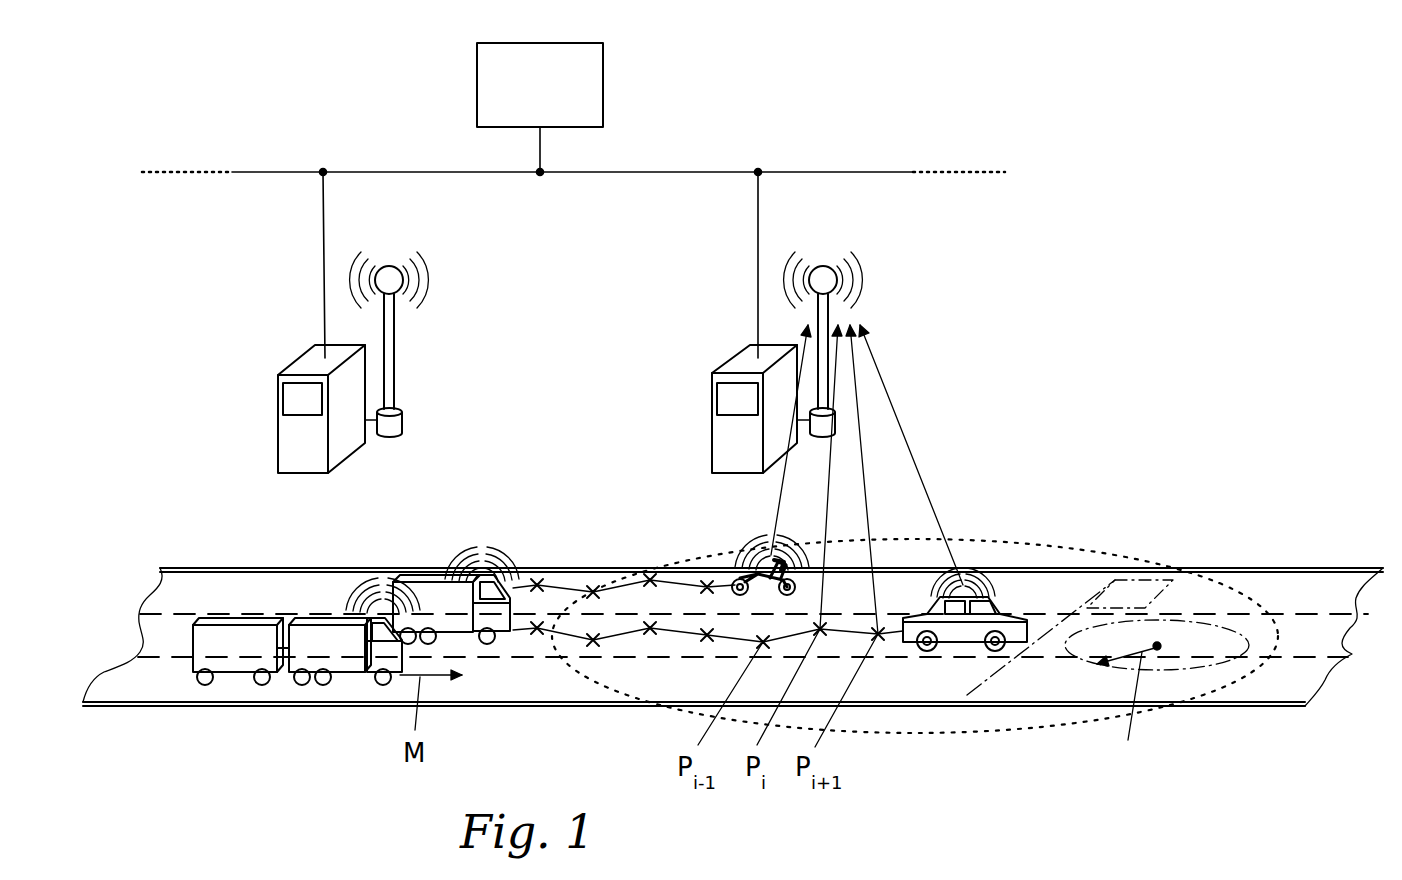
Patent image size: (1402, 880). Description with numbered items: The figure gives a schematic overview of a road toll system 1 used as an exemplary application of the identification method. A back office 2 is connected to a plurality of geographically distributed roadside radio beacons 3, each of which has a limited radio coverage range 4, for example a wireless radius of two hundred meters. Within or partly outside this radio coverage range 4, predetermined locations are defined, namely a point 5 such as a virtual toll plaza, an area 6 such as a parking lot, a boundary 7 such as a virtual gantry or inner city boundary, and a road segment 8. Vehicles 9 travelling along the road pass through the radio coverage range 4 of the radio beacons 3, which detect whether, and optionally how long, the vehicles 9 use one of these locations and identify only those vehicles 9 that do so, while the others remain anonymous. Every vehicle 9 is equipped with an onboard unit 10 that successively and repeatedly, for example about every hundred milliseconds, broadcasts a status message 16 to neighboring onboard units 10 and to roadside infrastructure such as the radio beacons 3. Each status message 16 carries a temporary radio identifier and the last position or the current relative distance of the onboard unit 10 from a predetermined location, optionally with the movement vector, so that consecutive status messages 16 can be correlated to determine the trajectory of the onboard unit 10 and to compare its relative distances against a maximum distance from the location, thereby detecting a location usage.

The road toll system 1 is at (1147, 323).
The back office 2 is at (606, 85).
The roadside radio beacon 3 is at (300, 450).
The radio coverage range 4 is at (1086, 548).
The point 5 is at (1158, 650).
The area 6 is at (1130, 580).
The boundary 7 is at (987, 672).
The road segment 8 is at (1285, 673).
The vehicle 9 is at (242, 645).
The onboard unit 10 is at (963, 583).
The status message 16 is at (868, 479).